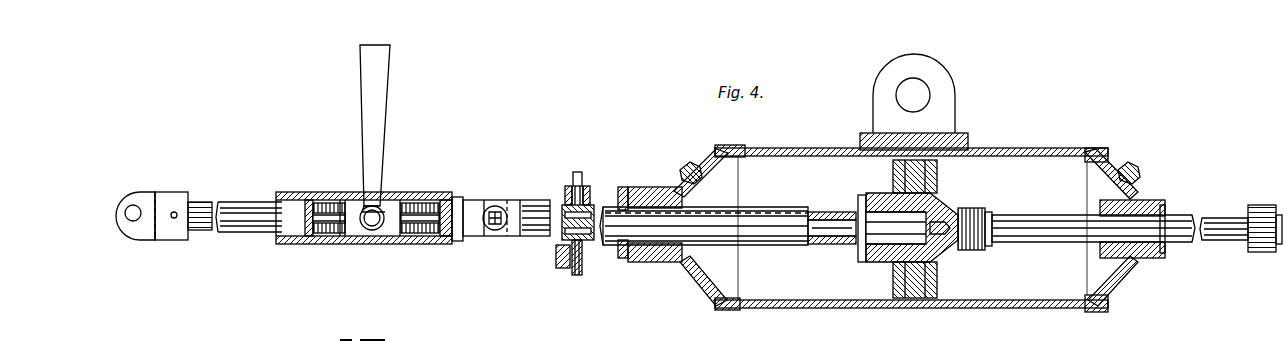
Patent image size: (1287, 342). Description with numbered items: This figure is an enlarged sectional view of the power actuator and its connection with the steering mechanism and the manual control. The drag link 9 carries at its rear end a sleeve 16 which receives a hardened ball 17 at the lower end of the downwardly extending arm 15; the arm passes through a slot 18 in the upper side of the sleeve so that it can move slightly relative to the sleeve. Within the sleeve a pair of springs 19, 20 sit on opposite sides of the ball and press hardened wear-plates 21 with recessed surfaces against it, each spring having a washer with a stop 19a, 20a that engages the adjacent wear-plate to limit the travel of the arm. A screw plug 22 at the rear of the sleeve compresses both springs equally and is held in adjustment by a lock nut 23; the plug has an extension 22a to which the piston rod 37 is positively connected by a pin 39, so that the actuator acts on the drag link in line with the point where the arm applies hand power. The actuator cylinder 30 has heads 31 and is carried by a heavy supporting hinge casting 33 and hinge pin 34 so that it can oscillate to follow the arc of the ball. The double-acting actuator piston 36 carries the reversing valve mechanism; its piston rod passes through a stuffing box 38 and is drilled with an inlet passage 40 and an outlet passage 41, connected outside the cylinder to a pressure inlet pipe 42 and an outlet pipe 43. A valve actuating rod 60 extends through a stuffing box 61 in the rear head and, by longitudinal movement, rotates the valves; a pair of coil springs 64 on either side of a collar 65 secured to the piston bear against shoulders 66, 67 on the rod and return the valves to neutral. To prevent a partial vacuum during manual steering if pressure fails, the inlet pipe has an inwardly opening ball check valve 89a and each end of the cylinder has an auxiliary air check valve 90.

The drag link 9 is at (243, 224).
The arm 15 is at (382, 97).
The sleeve 16 is at (372, 232).
The hardened ball 17 is at (384, 204).
The slot 18 is at (353, 196).
The spring 19 is at (322, 242).
The stop 19a is at (321, 198).
The spring 20 is at (420, 242).
The stop 20a is at (428, 204).
The wear-plates 21 is at (350, 242).
The screw plug 22 is at (457, 197).
The extension 22a is at (470, 238).
The lock nut 23 is at (490, 207).
The actuator cylinder 30 is at (876, 302).
The heads 31 is at (712, 156).
The supporting hinge casting 33 is at (958, 133).
The hinge pin 34 is at (930, 95).
The actuator piston 36 is at (940, 298).
The piston rod 37 is at (684, 262).
The stuffing box 38 is at (624, 258).
The pin 39 is at (497, 212).
The inlet passage 40 is at (834, 238).
The outlet passage 41 is at (828, 212).
The pressure inlet pipe 42 is at (576, 275).
The outlet pipe 43 is at (583, 185).
The valve actuating rod 60 is at (1240, 242).
The stuffing box 61 is at (1138, 258).
The coil springs 64 is at (964, 208).
The collar 65 is at (990, 210).
The shoulder 66 is at (1000, 214).
The shoulder 67 is at (966, 252).
The ball check valve 89a is at (556, 258).
The ball check valves 90 is at (682, 170).